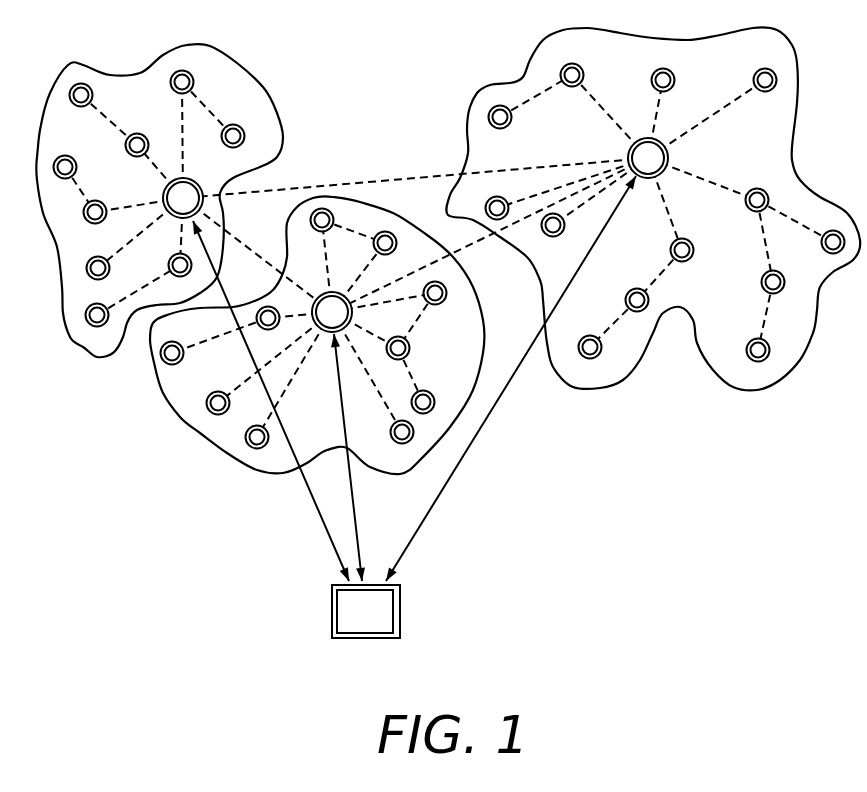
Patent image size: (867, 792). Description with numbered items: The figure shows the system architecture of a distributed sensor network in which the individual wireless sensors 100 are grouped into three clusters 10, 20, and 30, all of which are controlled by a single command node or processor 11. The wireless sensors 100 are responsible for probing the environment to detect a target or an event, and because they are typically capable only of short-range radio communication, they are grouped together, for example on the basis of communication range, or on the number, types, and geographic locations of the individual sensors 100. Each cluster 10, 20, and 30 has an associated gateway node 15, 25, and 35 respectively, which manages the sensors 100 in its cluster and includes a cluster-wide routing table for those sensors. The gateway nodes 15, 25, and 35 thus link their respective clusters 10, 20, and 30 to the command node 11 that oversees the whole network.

The cluster 10 is at (268, 84).
The cluster 20 is at (272, 475).
The cluster 30 is at (727, 390).
The gateway node 15 is at (203, 203).
The gateway node 25 is at (337, 293).
The gateway node 35 is at (668, 152).
The wireless sensor 100 is at (488, 117).
The command node 11 is at (400, 605).